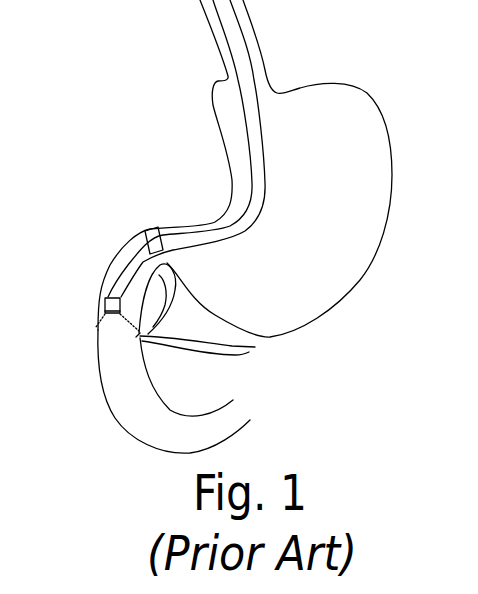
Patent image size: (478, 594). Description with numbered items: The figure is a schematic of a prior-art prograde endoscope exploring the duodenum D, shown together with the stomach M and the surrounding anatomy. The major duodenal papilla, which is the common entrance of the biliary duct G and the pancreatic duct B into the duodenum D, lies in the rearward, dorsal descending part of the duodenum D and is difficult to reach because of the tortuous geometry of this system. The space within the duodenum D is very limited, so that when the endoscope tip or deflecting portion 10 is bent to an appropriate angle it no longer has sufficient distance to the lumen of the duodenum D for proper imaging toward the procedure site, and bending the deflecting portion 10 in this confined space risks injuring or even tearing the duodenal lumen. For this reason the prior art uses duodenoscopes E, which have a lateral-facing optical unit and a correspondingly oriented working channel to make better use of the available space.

The deflecting portion 10 is at (125, 264).
The biliary duct G is at (160, 279).
The stomach M is at (342, 250).
The duodenum D is at (128, 341).
The duodenoscope E is at (122, 390).
The pancreatic duct B is at (250, 351).